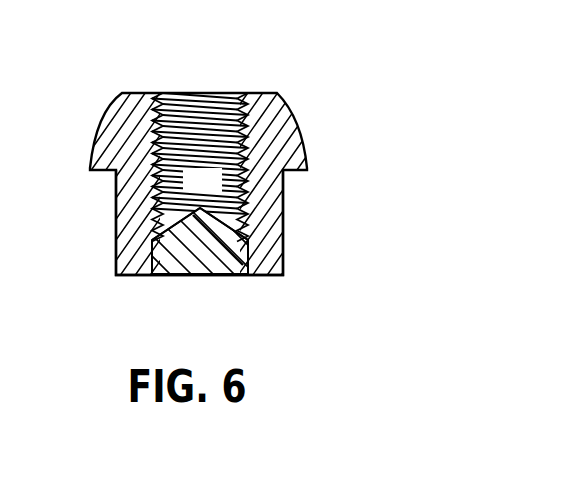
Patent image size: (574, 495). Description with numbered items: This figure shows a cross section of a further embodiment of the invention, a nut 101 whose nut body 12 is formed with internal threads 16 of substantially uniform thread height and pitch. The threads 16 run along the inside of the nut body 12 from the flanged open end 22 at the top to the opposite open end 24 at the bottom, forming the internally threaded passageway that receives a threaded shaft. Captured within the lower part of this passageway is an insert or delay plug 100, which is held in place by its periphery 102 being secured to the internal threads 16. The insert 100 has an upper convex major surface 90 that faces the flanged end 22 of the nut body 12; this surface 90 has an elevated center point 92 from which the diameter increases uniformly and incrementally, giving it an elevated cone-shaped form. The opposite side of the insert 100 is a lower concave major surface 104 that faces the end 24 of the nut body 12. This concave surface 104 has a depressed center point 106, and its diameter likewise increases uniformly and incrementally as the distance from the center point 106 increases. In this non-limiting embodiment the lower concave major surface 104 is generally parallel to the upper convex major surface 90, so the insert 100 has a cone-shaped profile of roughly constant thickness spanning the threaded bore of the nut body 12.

The nut 101 is at (118, 80).
The nut body 12 is at (294, 87).
The internal threads 16 is at (200, 105).
The flanged open end 22 is at (300, 128).
The opposite open end 24 is at (276, 282).
The elevated center point 92 is at (202, 181).
The upper convex major surface 90 is at (252, 212).
The periphery 102 is at (262, 242).
The lower concave major surface 104 is at (172, 276).
The depressed center point 106 is at (200, 262).
The insert or delay plug 100 is at (223, 286).